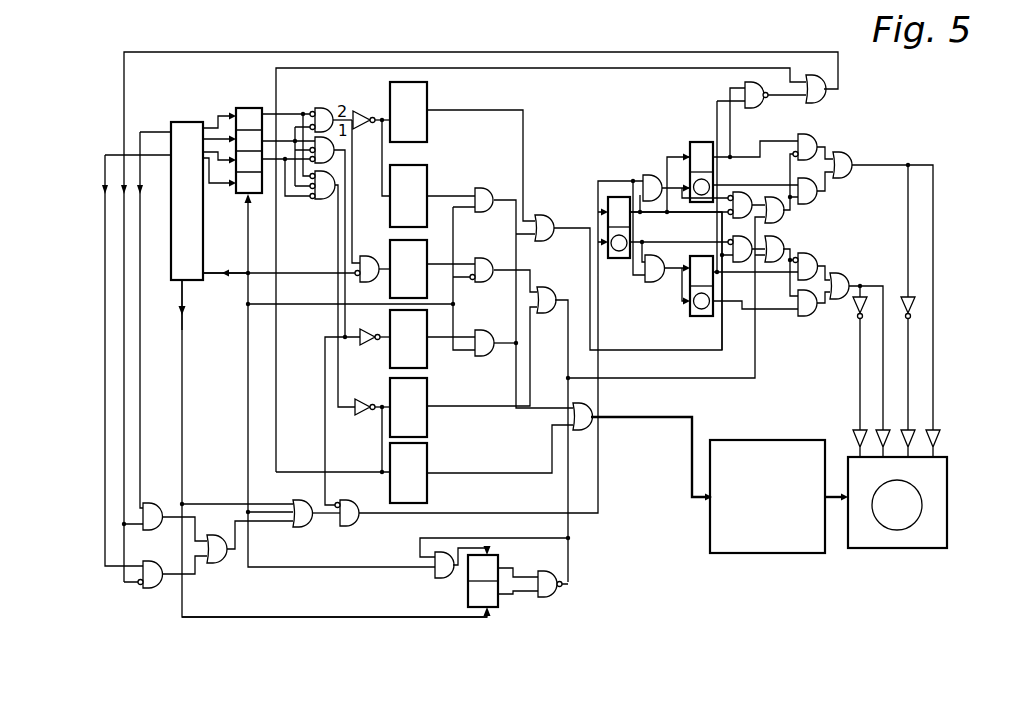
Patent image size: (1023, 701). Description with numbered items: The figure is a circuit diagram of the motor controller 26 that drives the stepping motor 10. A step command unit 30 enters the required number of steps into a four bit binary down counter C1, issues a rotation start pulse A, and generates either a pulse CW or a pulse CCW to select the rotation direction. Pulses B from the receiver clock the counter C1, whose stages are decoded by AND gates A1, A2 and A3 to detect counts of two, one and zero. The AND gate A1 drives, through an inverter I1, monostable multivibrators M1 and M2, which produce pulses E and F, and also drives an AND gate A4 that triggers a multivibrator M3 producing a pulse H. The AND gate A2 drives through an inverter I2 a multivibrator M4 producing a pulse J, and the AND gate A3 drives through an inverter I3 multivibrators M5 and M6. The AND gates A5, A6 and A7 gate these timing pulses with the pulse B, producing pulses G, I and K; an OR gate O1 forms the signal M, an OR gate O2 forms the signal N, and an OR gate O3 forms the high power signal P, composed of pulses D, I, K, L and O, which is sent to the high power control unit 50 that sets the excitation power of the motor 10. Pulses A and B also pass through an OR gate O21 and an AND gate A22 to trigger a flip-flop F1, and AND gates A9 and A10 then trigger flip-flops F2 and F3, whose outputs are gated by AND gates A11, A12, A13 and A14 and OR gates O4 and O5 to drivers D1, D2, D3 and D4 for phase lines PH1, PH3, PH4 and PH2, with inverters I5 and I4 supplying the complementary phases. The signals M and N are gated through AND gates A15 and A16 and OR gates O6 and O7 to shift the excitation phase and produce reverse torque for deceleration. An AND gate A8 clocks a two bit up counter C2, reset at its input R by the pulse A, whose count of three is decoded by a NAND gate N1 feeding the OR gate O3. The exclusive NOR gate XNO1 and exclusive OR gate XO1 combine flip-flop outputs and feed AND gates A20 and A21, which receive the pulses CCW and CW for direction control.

The motor controller 26 is at (944, 97).
The step command unit 30 is at (188, 122).
The high power control unit 50 is at (785, 440).
The motor 10 is at (893, 548).
The four bit binary down counter C1 is at (251, 108).
The two bit binary up counter C2 is at (501, 557).
The AND gate A1 is at (319, 108).
The AND gate A2 is at (336, 146).
The AND gate A3 is at (336, 180).
The AND gate A4 is at (369, 255).
The AND gate A5 is at (487, 188).
The AND gate A6 is at (480, 258).
The AND gate A7 is at (481, 330).
The AND gate A8 is at (440, 578).
The AND gate A9 is at (652, 175).
The AND gate A10 is at (652, 282).
The AND gate A11 is at (813, 135).
The AND gate A12 is at (816, 196).
The AND gate A13 is at (817, 260).
The AND gate A14 is at (805, 318).
The AND gate A15 is at (744, 192).
The AND gate A16 is at (742, 262).
The AND gate A20 is at (156, 503).
The AND gate A21 is at (162, 561).
The AND gate A22 is at (349, 526).
The OR gate O1 is at (546, 215).
The OR gate O2 is at (544, 287).
The OR gate O3 is at (585, 430).
The OR gate O4 is at (853, 165).
The OR gate O5 is at (849, 286).
The OR gate O6 is at (784, 213).
The OR gate O7 is at (785, 247).
The OR gate O21 is at (295, 500).
The inverter I1 is at (362, 108).
The inverter I2 is at (374, 327).
The inverter I3 is at (364, 394).
The inverter I4 is at (856, 316).
The inverter I5 is at (910, 296).
The NAND gate N1 is at (550, 598).
The exclusive NOR gate XNO1 is at (744, 92).
The exclusive OR gate XO1 is at (824, 99).
The flip-flop F1 is at (616, 197).
The flip-flop F2 is at (698, 142).
The flip-flop F3 is at (698, 316).
The monostable multivibrator M1 is at (408, 112).
The monostable multivibrator M2 is at (408, 196).
The monostable multivibrator M3 is at (408, 269).
The monostable multivibrator M4 is at (408, 339).
The monostable multivibrator M5 is at (408, 407).
The monostable multivibrator M6 is at (408, 473).
The driver D1 is at (936, 428).
The driver D2 is at (911, 428).
The driver D3 is at (886, 428).
The driver D4 is at (863, 428).
The phase 1 line PH1 is at (936, 368).
The phase 2 line PH2 is at (860, 337).
The phase 3 line PH3 is at (908, 365).
The phase 4 line PH4 is at (883, 352).
The clockwise pulse CW is at (155, 147).
The counterclockwise pulse CCW is at (146, 122).
The rotation start pulse A is at (171, 305).
The pulse B is at (225, 258).
The pulse D is at (494, 537).
The pulse E is at (481, 153).
The pulse F is at (451, 184).
The pulse G is at (533, 293).
The pulse H is at (451, 255).
The pulse I is at (515, 270).
The pulse J is at (451, 326).
The pulse K is at (505, 333).
The pulse L is at (482, 356).
The signal M is at (638, 279).
The signal N is at (563, 430).
The pulse O is at (500, 449).
The high power signal P is at (646, 443).
The reset input R is at (343, 628).